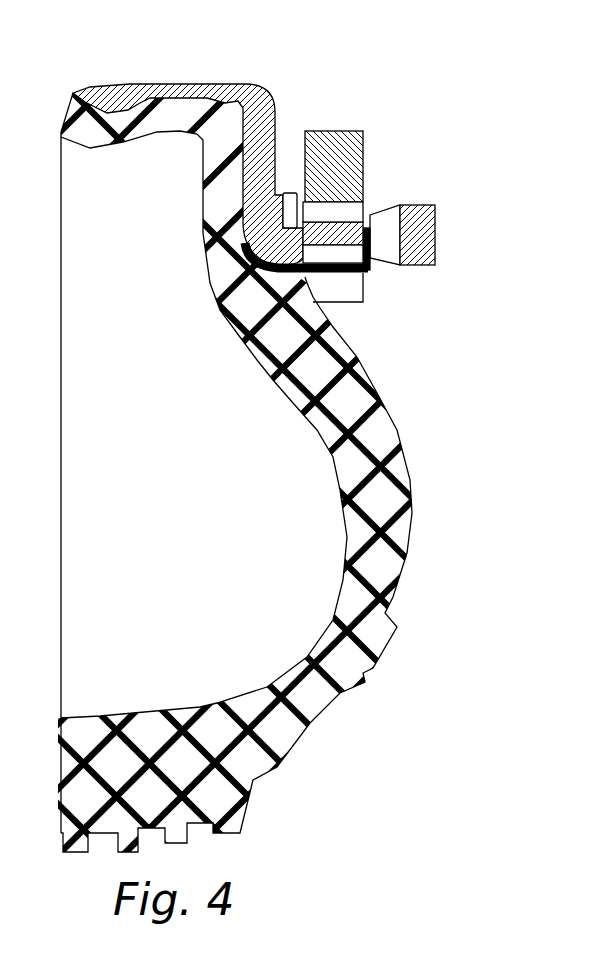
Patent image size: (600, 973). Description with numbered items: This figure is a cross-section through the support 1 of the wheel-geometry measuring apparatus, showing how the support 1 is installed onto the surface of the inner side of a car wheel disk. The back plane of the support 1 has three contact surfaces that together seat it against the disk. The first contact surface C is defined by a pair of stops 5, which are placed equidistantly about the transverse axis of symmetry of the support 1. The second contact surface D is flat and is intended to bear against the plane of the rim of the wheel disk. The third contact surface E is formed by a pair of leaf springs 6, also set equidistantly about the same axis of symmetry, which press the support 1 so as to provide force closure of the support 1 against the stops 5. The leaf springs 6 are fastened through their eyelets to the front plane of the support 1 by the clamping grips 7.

The support 1 is at (328, 296).
The stops 5 is at (333, 200).
The leaf springs 6 is at (363, 280).
The clamping grips 7 is at (418, 250).
The contact surface C is at (292, 180).
The contact surface D is at (318, 222).
The contact surface E is at (322, 257).